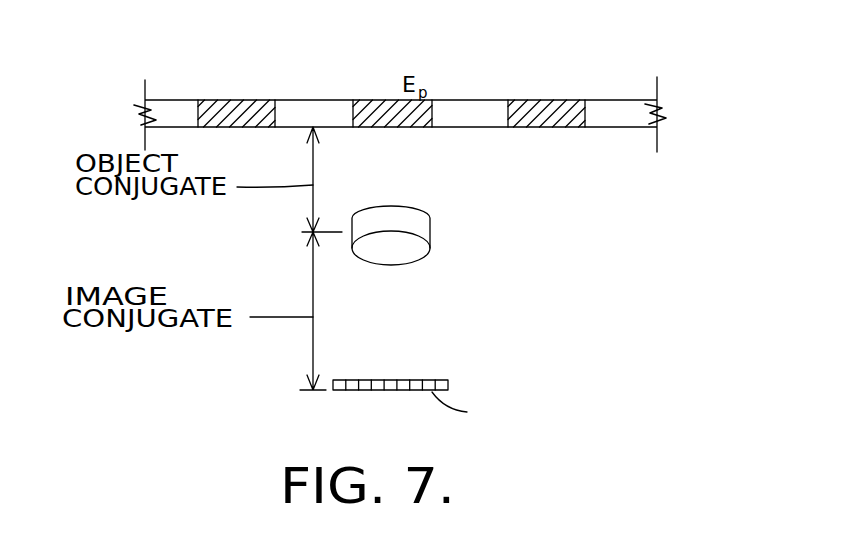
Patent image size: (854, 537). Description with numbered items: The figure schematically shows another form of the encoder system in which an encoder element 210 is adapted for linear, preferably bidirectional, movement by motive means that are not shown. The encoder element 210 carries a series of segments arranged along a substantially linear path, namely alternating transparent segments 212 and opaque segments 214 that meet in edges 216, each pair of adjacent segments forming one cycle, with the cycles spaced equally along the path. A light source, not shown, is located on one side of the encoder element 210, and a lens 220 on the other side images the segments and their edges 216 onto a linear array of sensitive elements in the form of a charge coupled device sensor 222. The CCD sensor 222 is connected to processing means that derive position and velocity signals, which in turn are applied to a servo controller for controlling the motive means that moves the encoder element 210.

The encoder element 210 is at (618, 87).
The transparent segments 212 is at (327, 108).
The opaque segments 214 is at (227, 107).
The edges 216 is at (285, 105).
The lens 220 is at (430, 255).
The charge coupled device sensor 222 is at (456, 375).